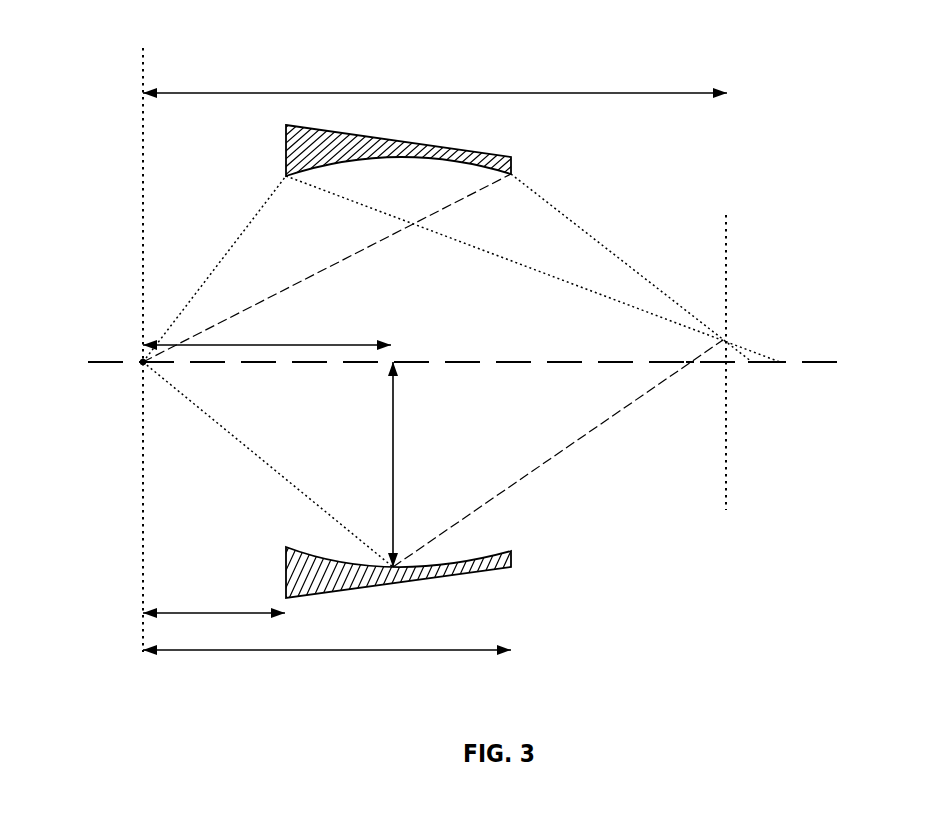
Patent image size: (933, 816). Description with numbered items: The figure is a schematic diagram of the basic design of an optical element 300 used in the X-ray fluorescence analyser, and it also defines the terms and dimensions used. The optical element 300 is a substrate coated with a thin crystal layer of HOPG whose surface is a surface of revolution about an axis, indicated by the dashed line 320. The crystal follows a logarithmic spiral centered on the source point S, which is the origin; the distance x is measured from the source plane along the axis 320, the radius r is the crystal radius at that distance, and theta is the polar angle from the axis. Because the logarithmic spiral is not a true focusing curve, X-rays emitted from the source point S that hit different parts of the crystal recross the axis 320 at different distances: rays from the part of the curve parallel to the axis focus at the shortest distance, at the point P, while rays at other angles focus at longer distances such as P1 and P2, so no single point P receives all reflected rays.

The optical element 300 is at (818, 82).
The axis 320 is at (821, 357).
The source point S is at (132, 378).
The minimum focal distance point P is at (689, 367).
The image point P1 is at (752, 367).
The image point P2 is at (782, 368).